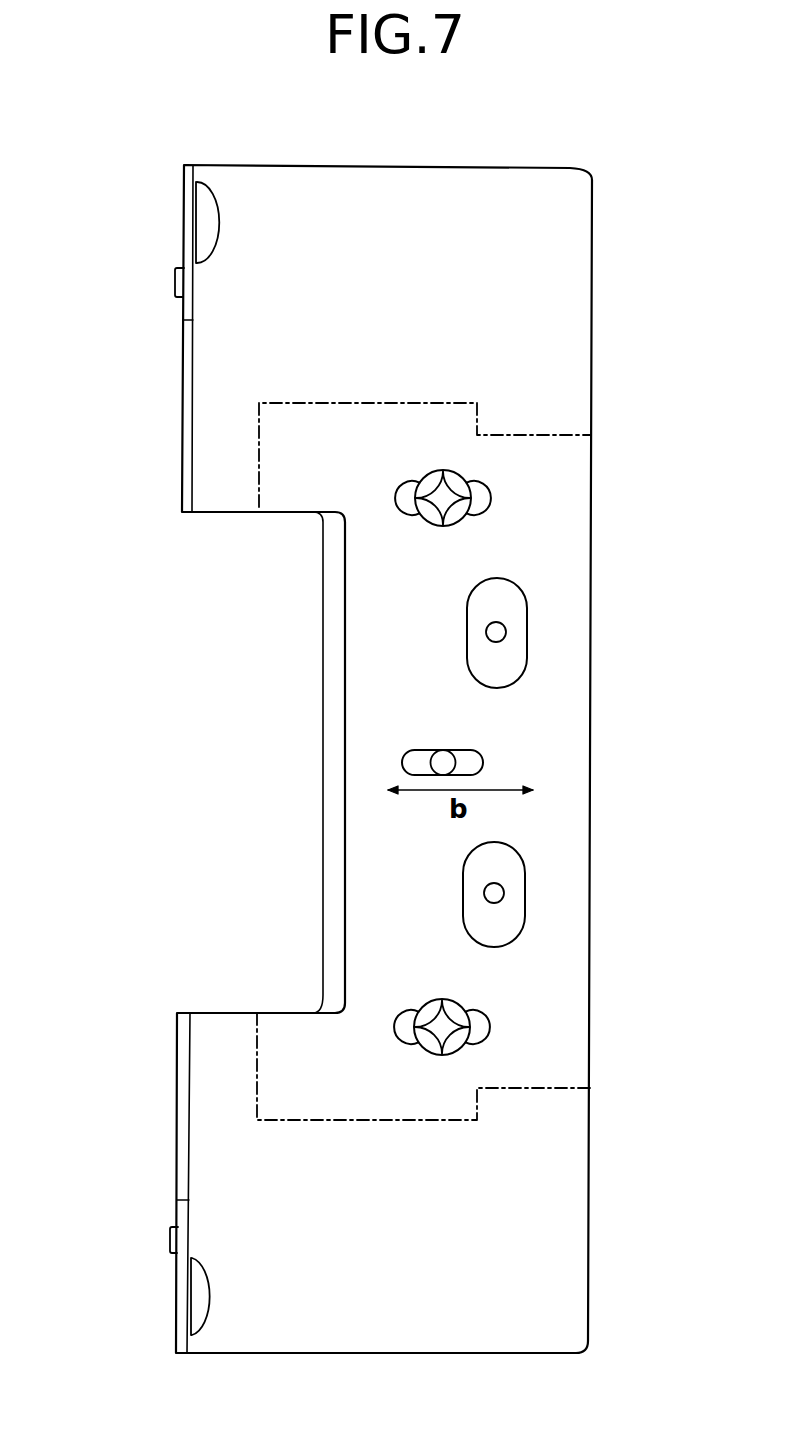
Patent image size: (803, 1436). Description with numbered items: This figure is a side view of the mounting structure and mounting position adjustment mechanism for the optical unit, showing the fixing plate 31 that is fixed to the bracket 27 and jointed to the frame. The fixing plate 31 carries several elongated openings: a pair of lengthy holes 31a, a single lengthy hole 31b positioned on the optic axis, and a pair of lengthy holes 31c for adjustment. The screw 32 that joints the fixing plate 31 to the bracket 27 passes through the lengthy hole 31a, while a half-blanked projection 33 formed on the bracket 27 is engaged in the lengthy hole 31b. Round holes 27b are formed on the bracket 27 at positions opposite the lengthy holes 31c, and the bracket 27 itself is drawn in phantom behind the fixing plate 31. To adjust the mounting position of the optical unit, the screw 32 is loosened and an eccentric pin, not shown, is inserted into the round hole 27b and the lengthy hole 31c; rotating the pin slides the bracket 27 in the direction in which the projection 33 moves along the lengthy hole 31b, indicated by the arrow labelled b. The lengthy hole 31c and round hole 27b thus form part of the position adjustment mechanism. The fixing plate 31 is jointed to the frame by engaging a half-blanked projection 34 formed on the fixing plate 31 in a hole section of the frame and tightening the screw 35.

The bracket 27 is at (343, 1124).
The round hole 27b is at (486, 631).
The fixing plate 31 is at (583, 263).
The lengthy hole 31a is at (483, 497).
The lengthy hole 31b is at (483, 758).
The lengthy hole for adjustment 31c is at (527, 633).
The screw 32 is at (434, 473).
The half-blanked projection 33 is at (443, 750).
The half-blanked projection 34 is at (175, 285).
The screw 35 is at (203, 222).